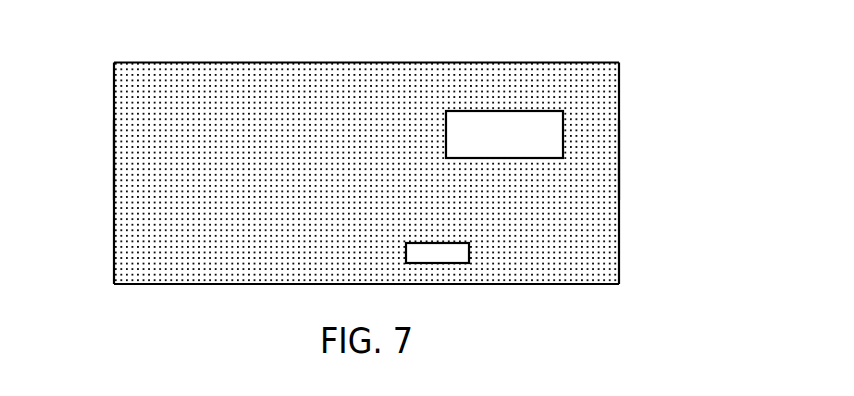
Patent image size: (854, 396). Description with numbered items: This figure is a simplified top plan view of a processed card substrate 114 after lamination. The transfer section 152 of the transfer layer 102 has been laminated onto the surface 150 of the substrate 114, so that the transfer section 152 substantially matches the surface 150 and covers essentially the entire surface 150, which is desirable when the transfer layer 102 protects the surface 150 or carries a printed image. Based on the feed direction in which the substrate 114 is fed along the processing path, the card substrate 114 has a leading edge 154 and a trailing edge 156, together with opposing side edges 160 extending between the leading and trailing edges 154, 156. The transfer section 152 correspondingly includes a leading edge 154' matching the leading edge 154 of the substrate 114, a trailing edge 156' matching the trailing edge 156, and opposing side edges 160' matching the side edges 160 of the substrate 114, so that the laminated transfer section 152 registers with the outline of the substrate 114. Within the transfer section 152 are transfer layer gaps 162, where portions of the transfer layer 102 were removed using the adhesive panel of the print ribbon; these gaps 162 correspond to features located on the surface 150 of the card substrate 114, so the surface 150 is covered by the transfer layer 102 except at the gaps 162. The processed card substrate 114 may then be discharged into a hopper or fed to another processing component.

The transfer layer 102 is at (233, 75).
The substrate 114 is at (672, 58).
The surface 150 is at (127, 103).
The transfer section 152 is at (313, 73).
The leading edge 154 is at (81, 174).
The leading edge of the transfer section 154' is at (79, 160).
The trailing edge 156 is at (650, 174).
The trailing edge of the transfer section 156' is at (653, 160).
The side edges 160 is at (374, 171).
The side edges of the transfer section 160' is at (366, 171).
The transfer layer gaps 162 is at (552, 138).